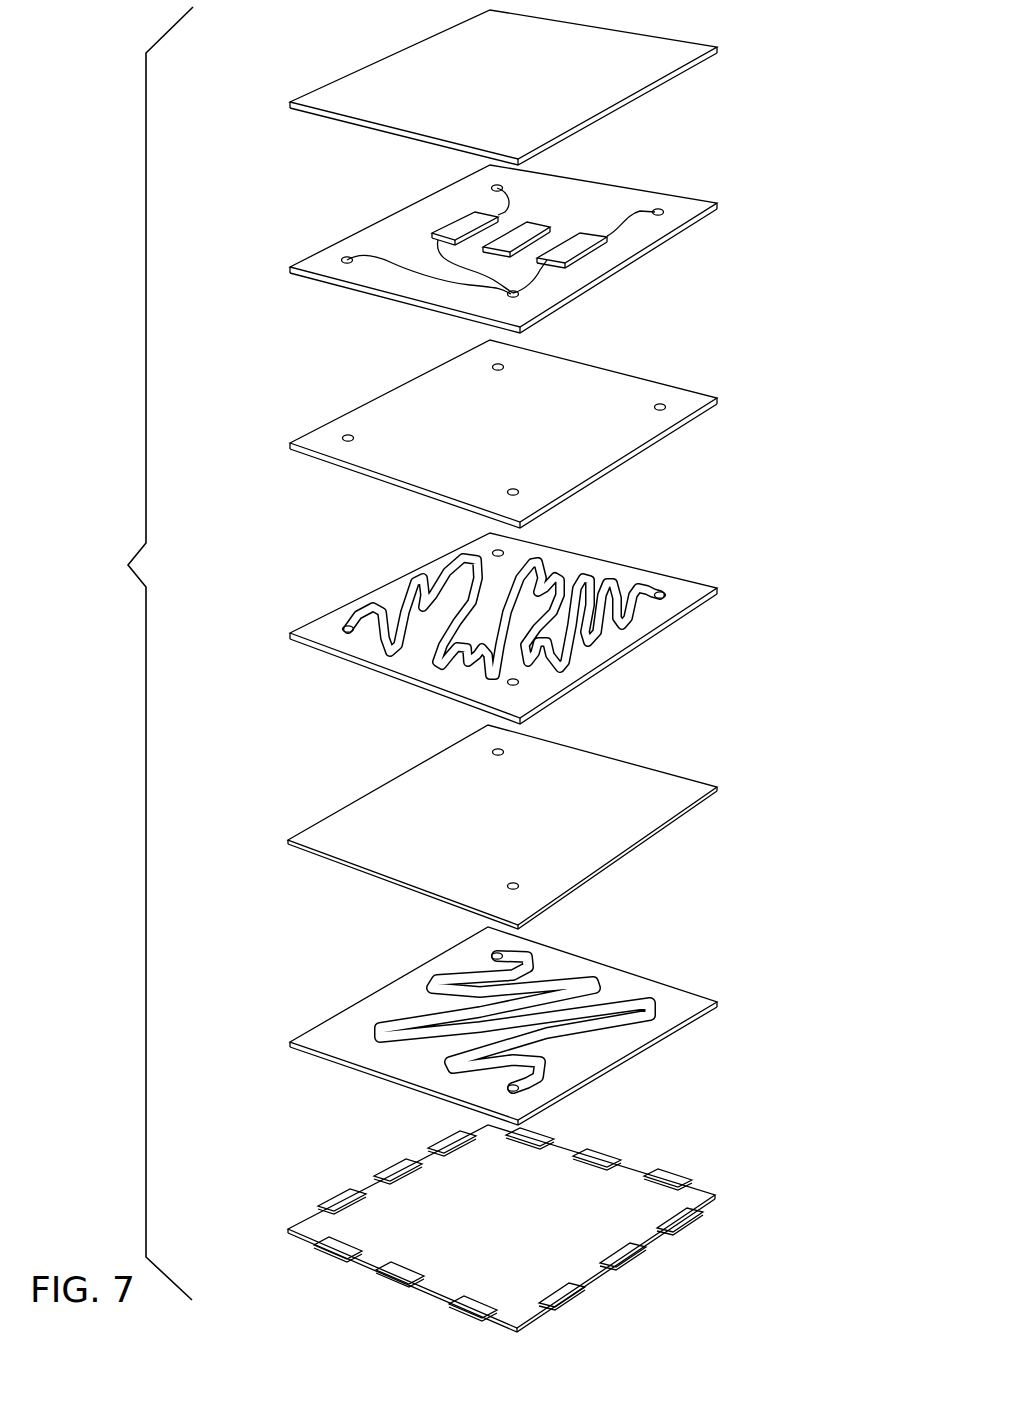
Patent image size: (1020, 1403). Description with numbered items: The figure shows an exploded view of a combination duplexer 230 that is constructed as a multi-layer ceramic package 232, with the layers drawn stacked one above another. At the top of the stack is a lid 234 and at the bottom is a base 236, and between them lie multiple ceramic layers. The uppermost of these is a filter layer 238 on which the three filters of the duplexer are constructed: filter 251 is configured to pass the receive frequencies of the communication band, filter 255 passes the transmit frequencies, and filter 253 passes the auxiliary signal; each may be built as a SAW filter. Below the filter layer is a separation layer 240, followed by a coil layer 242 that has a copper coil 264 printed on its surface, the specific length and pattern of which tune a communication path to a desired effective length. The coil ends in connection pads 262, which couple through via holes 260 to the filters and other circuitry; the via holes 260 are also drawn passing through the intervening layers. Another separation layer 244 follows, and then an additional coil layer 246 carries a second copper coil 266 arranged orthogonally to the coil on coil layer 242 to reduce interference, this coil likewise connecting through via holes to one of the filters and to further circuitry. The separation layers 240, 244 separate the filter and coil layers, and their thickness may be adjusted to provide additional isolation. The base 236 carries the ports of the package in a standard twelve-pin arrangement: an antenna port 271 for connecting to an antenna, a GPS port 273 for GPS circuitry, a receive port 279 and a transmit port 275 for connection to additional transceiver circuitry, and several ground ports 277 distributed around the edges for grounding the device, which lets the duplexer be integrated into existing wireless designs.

The combination duplexer 230 is at (306, 76).
The multi-layer ceramic package 232 is at (138, 653).
The lid 234 is at (660, 55).
The base 236 is at (697, 1195).
The filter layer 238 is at (630, 198).
The separation layer 240 is at (605, 445).
The coil layer 242 is at (575, 560).
The separation layer 244 is at (678, 790).
The additional coil layer 246 is at (655, 985).
The filter 251 is at (447, 228).
The filter 253 is at (522, 242).
The filter 255 is at (608, 241).
The via holes 260 is at (660, 208).
The connection pads 262 is at (663, 592).
The copper coil 264 is at (605, 640).
The copper coil 266 is at (405, 1010).
The antenna port 271 is at (400, 1273).
The GPS port 273 is at (596, 1160).
The transmit port 275 is at (625, 1255).
The ground ports 277 is at (450, 1140).
The receive port 279 is at (398, 1167).